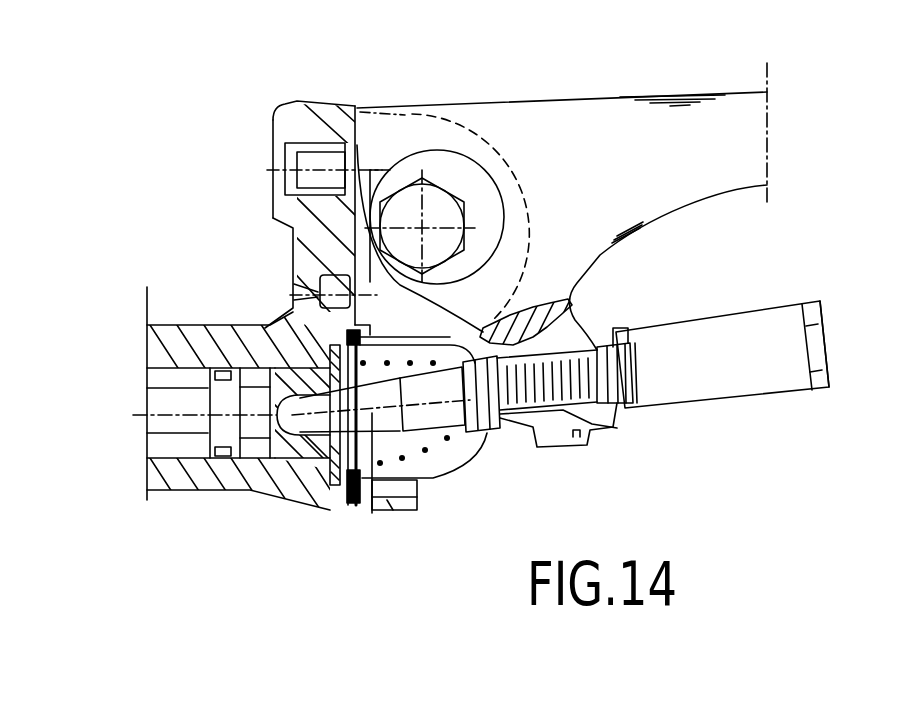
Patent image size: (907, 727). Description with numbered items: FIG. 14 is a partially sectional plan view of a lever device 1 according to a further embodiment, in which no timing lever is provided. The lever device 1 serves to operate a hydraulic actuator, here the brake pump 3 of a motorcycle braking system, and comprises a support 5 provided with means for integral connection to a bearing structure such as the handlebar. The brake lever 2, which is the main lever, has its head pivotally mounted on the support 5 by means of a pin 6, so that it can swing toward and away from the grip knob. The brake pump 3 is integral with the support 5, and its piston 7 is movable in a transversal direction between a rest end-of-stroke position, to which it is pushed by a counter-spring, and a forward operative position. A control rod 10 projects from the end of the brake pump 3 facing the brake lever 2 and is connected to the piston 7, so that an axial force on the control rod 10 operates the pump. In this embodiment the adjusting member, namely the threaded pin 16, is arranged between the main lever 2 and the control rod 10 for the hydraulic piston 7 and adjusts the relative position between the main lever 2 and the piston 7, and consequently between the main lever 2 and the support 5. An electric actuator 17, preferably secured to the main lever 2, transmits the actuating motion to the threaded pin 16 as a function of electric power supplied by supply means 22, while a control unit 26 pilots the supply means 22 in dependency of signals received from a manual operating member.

The lever device 1 is at (212, 278).
The brake lever 2 is at (737, 142).
The brake pump 3 is at (178, 486).
The support 5 is at (297, 128).
The pin 6 is at (425, 228).
The piston 7 is at (165, 408).
The control rod 10 is at (373, 500).
The threaded pin 16 is at (617, 428).
The electric actuator 17 is at (697, 348).
The supply means 22 is at (826, 320).
The control unit 26 is at (820, 392).